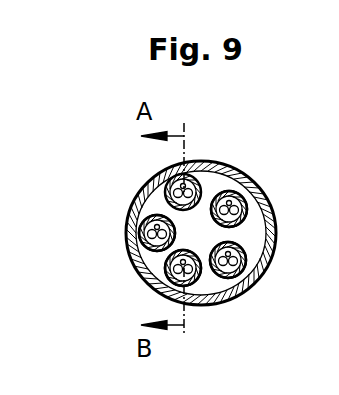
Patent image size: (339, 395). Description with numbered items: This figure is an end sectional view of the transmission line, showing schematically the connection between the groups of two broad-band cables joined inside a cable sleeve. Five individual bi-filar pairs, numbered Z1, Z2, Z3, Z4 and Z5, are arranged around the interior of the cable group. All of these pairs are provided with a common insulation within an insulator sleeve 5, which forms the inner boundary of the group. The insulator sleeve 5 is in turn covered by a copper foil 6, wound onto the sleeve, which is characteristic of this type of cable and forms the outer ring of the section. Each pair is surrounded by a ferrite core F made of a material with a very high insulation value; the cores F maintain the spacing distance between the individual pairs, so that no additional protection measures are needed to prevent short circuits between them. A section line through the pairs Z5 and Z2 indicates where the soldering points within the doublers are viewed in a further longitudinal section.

The insulator sleeve 5 is at (270, 252).
The copper foil 6 is at (276, 224).
The pair Z1 is at (127, 248).
The pair Z2 is at (170, 277).
The pair Z3 is at (240, 276).
The pair Z4 is at (240, 195).
The pair Z5 is at (195, 178).
The core F is at (152, 214).